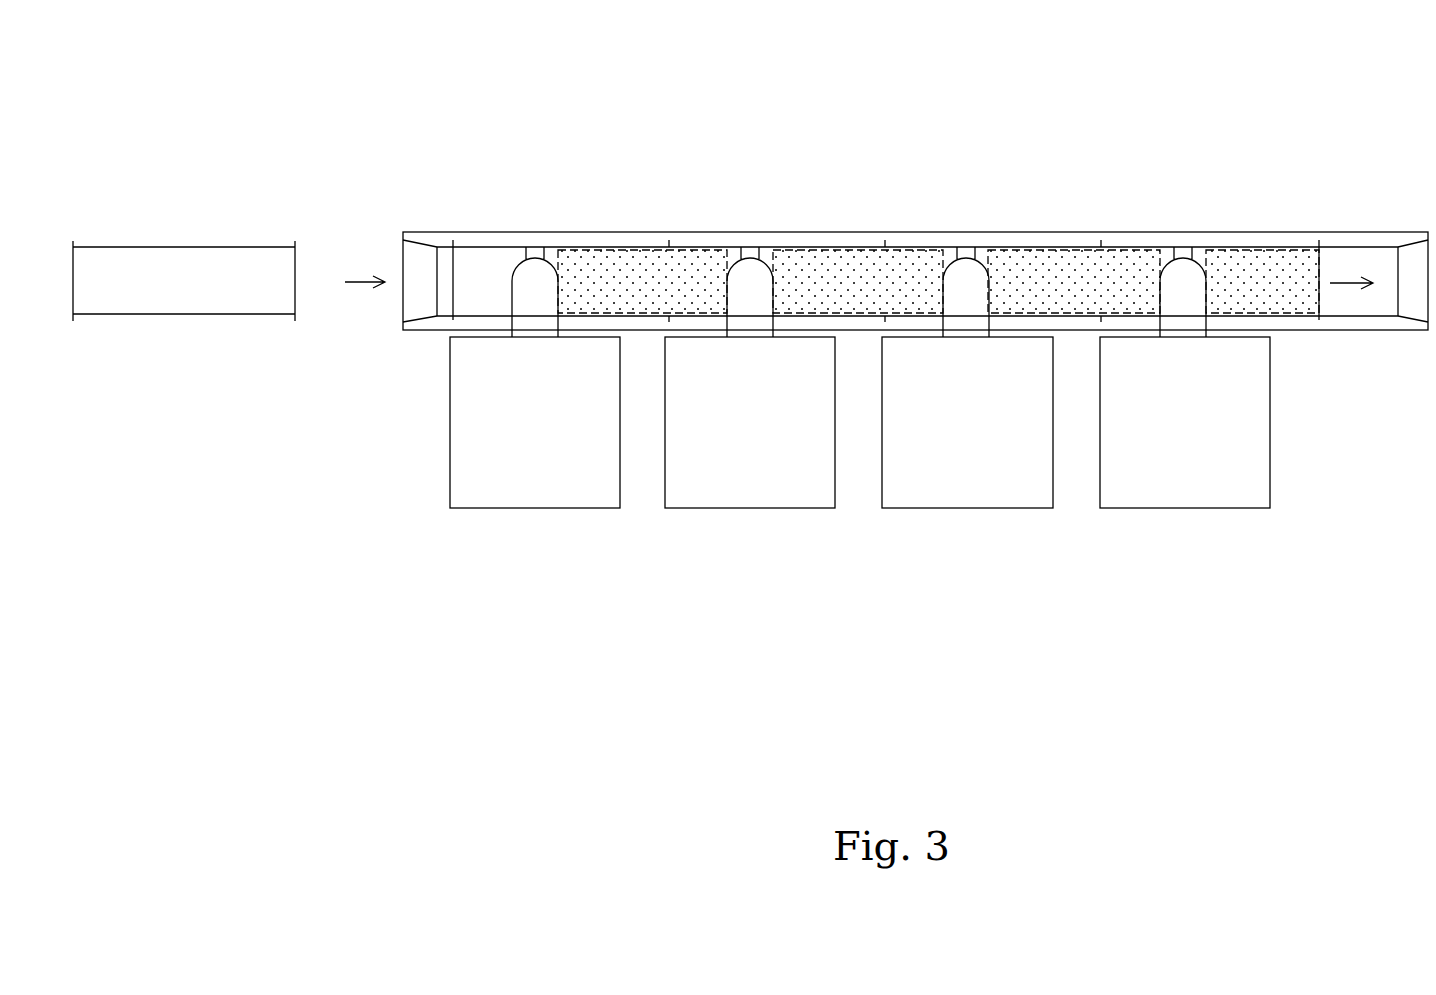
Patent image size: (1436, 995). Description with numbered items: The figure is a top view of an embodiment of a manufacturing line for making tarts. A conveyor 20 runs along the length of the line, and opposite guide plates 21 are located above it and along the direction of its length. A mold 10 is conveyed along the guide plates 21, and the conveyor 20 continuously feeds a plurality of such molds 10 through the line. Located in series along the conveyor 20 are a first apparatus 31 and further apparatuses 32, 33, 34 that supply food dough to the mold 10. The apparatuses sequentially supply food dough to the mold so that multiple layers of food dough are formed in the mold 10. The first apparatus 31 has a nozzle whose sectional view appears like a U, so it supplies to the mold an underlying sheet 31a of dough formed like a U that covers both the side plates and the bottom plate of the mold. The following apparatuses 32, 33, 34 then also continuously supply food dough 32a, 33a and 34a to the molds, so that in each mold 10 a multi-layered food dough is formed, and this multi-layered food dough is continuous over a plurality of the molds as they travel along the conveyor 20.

The mold 10 is at (202, 247).
The conveyor 20 is at (445, 232).
The guide plates 21 is at (443, 250).
The underlying sheet of dough 31a is at (582, 273).
The food dough 32a is at (798, 273).
The food dough 33a is at (1015, 273).
The food dough 34a is at (1233, 273).
The first apparatus 31 is at (538, 472).
The apparatus 32 is at (750, 472).
The apparatus 33 is at (958, 472).
The apparatus 34 is at (1170, 472).